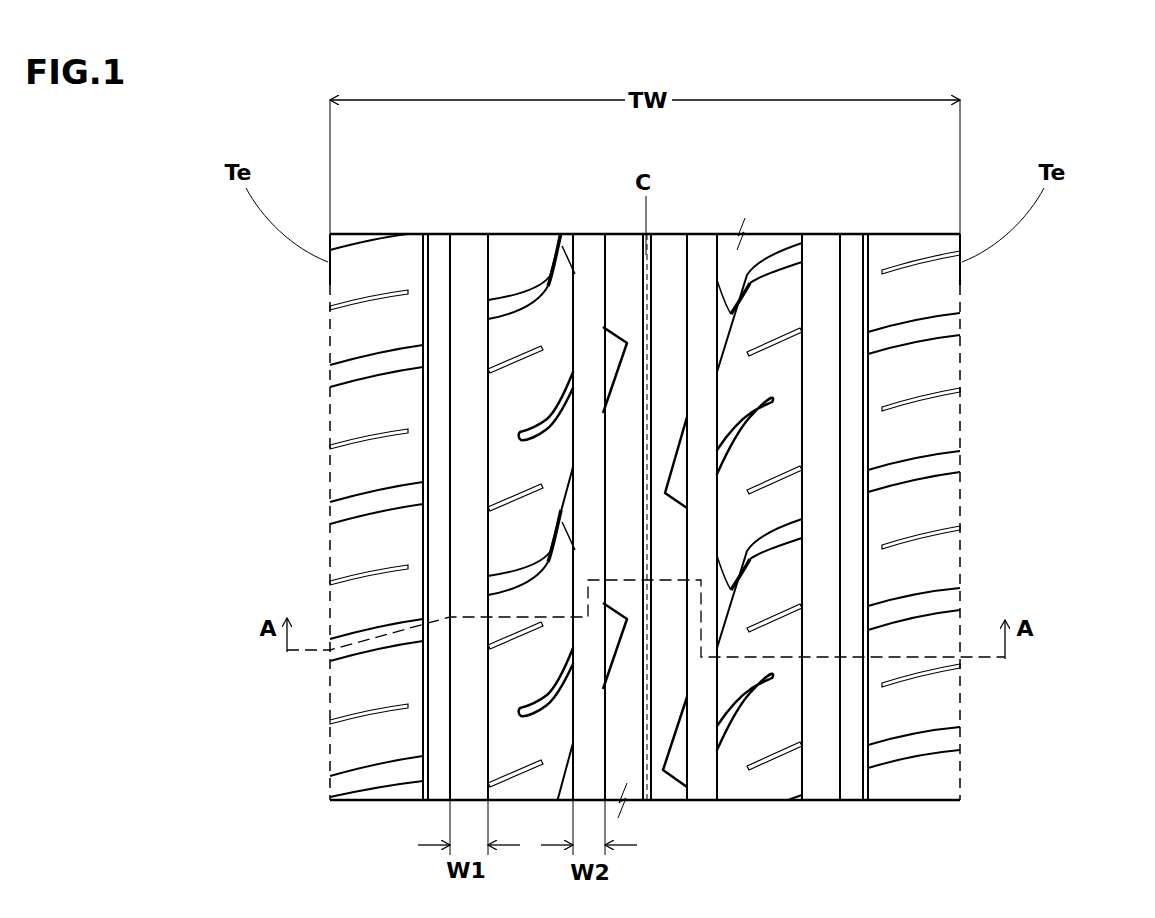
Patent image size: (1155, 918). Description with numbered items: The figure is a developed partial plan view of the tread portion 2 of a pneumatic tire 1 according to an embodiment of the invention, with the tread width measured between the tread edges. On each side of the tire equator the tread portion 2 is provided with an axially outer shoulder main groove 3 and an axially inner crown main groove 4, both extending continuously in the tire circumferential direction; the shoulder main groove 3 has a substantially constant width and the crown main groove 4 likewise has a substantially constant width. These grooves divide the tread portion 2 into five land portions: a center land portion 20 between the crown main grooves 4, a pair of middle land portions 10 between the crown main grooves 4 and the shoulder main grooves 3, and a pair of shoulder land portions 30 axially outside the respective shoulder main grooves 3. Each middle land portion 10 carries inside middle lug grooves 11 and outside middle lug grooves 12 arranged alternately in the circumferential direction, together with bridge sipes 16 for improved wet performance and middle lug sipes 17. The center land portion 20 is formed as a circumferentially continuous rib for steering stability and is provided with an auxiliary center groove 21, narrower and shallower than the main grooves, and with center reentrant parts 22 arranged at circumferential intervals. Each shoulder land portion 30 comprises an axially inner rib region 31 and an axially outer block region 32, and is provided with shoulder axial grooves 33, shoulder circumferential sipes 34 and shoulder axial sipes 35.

The pneumatic tire 1 is at (801, 226).
The tread portion 2 is at (645, 517).
The shoulder main groove 3 is at (471, 260).
The crown main groove 4 is at (586, 260).
The middle land portion 10 is at (515, 266).
The inside middle lug groove 11 is at (733, 436).
The outside middle lug groove 12 is at (773, 538).
The bridge sipe 16 is at (737, 580).
The middle lug sipe 17 is at (770, 352).
The center land portion 20 is at (624, 266).
The auxiliary center groove 21 is at (652, 256).
The center reentrant part 22 is at (610, 638).
The shoulder land portion 30 is at (388, 266).
The axially inner rib region 31 is at (851, 260).
The axially outer block region 32 is at (916, 270).
The shoulder axial groove 33 is at (367, 372).
The shoulder circumferential sipe 34 is at (425, 544).
The shoulder axial sipe 35 is at (367, 310).